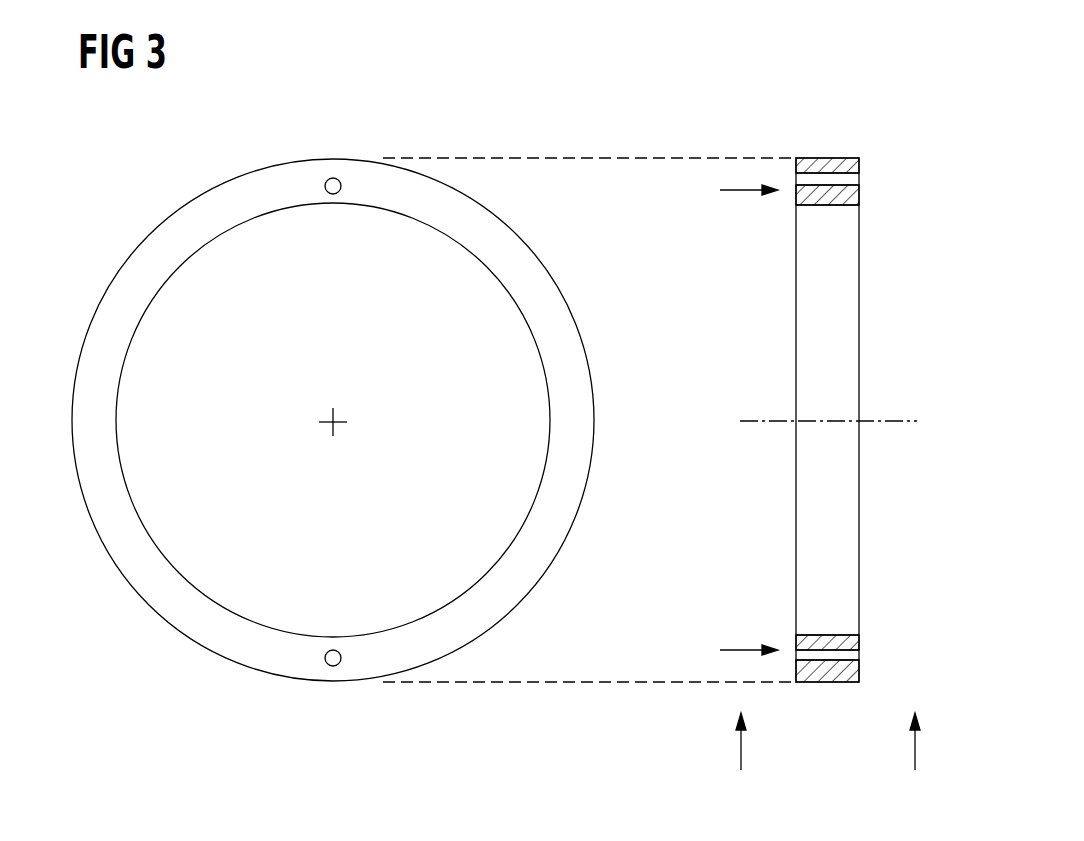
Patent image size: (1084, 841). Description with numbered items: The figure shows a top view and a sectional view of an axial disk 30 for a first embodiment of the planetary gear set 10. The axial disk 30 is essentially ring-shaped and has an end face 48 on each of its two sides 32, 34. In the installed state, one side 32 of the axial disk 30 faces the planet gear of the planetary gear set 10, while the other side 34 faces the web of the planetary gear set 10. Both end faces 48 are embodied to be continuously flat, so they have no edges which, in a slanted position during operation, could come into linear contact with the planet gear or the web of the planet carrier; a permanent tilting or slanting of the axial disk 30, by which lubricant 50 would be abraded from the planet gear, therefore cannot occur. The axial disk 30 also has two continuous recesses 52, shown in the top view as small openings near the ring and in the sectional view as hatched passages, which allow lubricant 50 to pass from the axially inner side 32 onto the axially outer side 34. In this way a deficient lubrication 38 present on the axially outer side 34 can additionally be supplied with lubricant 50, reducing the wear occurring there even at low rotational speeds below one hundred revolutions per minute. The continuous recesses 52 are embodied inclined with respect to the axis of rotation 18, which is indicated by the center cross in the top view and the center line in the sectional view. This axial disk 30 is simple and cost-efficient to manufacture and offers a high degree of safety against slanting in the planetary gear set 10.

The planetary gear set 10 is at (122, 672).
The axis of rotation 18 is at (338, 418).
The axial disk 30 is at (811, 157).
The side 32 is at (196, 211).
The side 34 is at (790, 157).
The deficient lubrication 38 is at (723, 350).
The end face 48 is at (794, 673).
The lubricant 50 is at (735, 194).
The continuous recess 52 is at (333, 178).